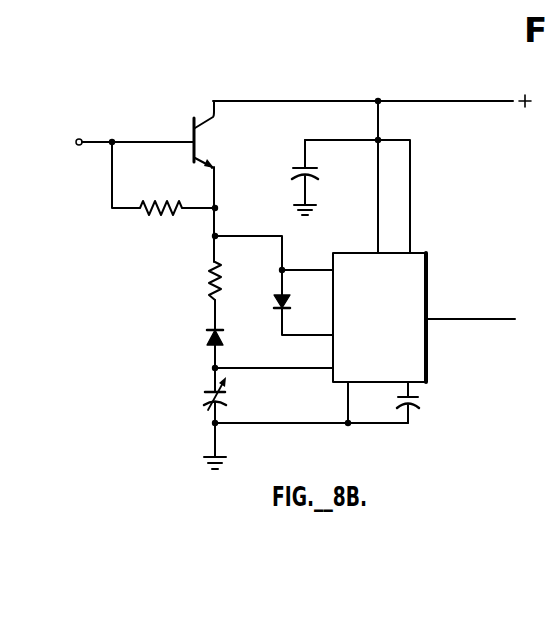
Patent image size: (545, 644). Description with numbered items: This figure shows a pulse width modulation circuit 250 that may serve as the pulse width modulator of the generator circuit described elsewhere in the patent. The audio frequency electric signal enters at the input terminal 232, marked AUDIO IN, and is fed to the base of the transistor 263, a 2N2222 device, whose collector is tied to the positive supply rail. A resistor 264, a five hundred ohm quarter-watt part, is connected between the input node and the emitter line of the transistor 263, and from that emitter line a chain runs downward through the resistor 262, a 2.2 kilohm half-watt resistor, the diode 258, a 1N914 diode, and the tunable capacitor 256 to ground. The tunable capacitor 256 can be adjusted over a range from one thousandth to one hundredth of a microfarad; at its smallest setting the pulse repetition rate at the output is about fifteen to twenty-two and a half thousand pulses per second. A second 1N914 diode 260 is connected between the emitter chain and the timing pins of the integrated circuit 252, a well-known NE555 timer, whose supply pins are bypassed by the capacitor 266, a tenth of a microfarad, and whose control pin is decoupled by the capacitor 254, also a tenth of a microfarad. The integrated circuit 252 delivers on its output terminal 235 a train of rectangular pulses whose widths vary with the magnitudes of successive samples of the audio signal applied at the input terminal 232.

The input terminal 232 is at (92, 142).
The transistor 263 is at (220, 132).
The resistor 264 is at (170, 214).
The resistor 262 is at (209, 286).
The diode 258 is at (206, 336).
The tunable capacitor 256 is at (205, 395).
The diode 260 is at (273, 302).
The capacitor 266 is at (293, 171).
The integrated circuit 252 is at (428, 288).
The capacitor 254 is at (420, 402).
The output terminal 235 is at (484, 320).
The pulse width modulation circuit 250 is at (492, 234).